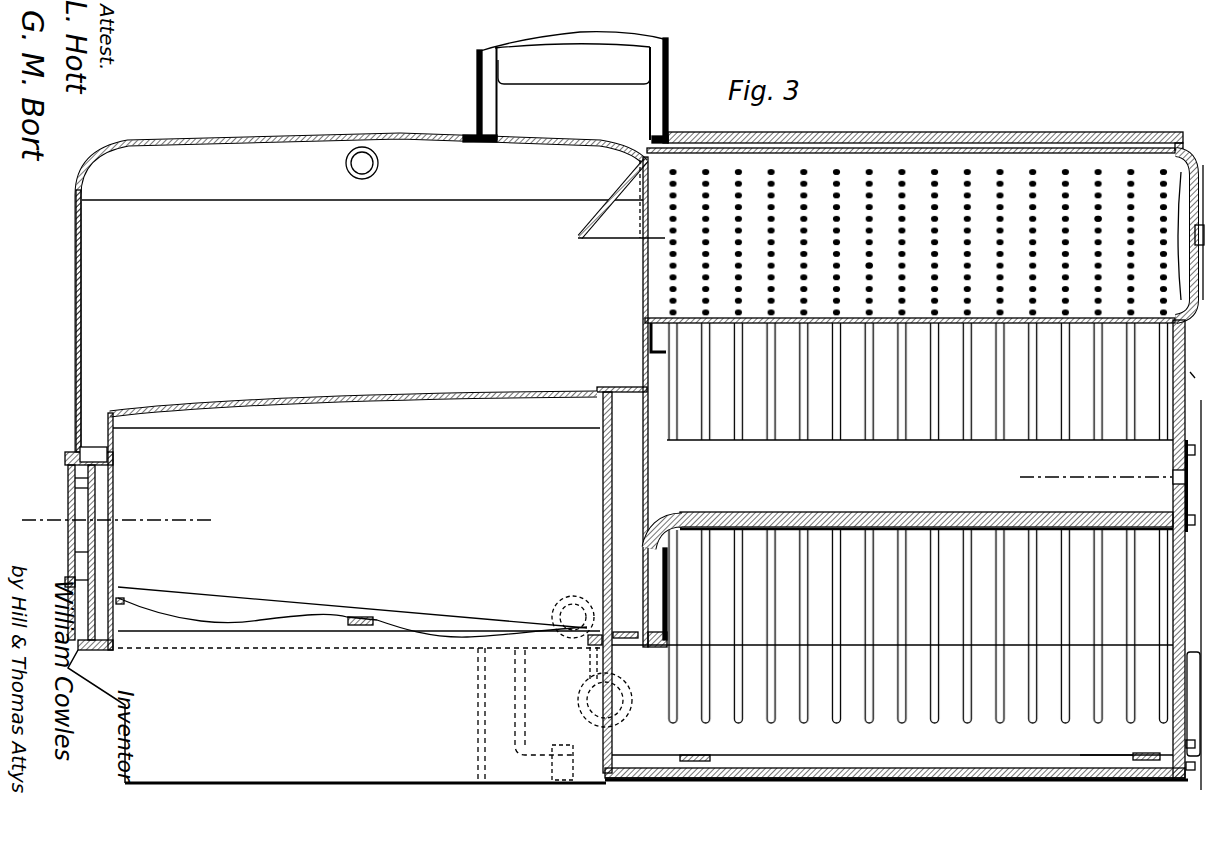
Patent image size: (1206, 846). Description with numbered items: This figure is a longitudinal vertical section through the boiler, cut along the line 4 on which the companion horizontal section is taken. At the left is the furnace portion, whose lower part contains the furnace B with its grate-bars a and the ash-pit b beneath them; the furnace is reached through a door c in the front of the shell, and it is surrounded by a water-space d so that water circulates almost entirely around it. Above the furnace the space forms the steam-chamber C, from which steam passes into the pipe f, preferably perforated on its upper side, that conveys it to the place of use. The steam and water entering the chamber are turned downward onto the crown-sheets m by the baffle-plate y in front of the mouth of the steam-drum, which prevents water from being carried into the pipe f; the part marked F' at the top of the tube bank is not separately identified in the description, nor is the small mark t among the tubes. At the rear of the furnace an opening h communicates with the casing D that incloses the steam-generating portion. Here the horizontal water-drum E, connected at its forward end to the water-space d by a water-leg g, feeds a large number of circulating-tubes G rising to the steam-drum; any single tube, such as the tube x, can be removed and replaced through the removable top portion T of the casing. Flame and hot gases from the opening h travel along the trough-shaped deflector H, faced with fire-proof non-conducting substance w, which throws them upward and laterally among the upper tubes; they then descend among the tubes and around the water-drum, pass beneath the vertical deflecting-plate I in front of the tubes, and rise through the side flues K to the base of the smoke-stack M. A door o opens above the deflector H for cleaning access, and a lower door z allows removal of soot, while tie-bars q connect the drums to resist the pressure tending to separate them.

The smoke-stack M is at (565, 87).
The top portion of the casing T is at (880, 140).
The perforated tube sheet F' is at (912, 240).
The tube opening t is at (1103, 216).
The tube x is at (875, 265).
The baffle-plate y is at (618, 196).
The pipe f is at (378, 167).
The trough-shaped deflector H is at (75, 300).
The steam-chamber C is at (361, 294).
The crown-sheets m is at (471, 393).
The furnace B is at (266, 531).
The openings h is at (617, 580).
The doors c is at (68, 505).
The section line 4 is at (607, 595).
The grate-bars a is at (359, 617).
The water-space d is at (100, 636).
The water-legs g is at (546, 611).
The water-drums E is at (573, 715).
The ash-pits b is at (337, 715).
The vertical deflecting-plate I is at (666, 597).
The circulating-tubes G is at (735, 386).
The flues K is at (1097, 550).
The door o is at (1172, 482).
The fire-proof non-conducting substance w is at (1024, 513).
The tie-bars q is at (697, 755).
The door z is at (1106, 743).
The casing D is at (1034, 782).